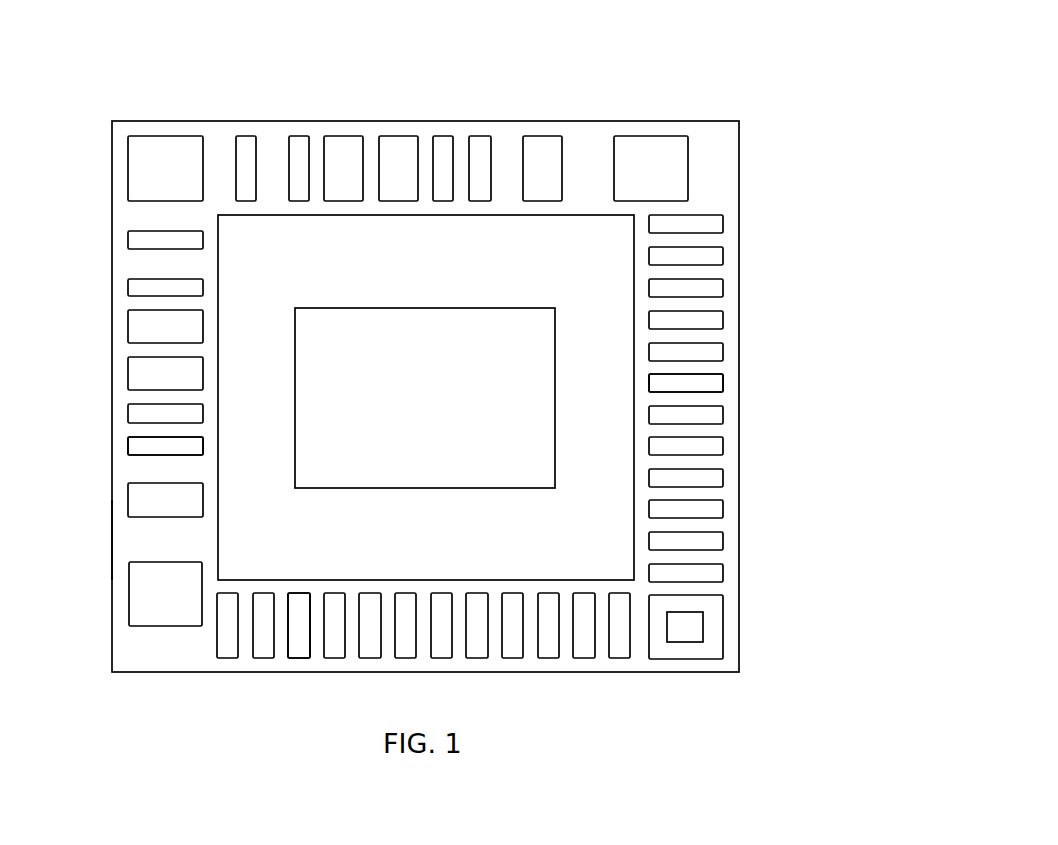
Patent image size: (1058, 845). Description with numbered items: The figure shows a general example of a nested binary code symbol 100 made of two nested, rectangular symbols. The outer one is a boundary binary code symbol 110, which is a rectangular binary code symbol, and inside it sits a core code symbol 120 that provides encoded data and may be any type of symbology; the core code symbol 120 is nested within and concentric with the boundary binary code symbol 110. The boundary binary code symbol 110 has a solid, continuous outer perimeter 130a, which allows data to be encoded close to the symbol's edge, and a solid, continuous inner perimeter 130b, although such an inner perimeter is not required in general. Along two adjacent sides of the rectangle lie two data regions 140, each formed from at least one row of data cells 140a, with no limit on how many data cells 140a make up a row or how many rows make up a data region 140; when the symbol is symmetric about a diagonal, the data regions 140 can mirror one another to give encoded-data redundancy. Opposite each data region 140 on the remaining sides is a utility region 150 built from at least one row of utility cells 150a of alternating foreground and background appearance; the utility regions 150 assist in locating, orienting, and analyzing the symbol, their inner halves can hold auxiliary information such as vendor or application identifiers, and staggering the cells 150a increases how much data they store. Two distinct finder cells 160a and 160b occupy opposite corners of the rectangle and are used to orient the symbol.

The nested binary code symbol 100 is at (278, 86).
The boundary binary code symbol 110 is at (718, 119).
The core code symbol 120 is at (340, 308).
The outer perimeter 130a is at (115, 540).
The inner perimeter 130b is at (503, 207).
The data region 140 is at (632, 118).
The data cell 140a is at (538, 153).
The utility region 150 is at (745, 362).
The utility cell 150a is at (710, 399).
The finder cell 160a is at (158, 181).
The finder cell 160b is at (710, 648).